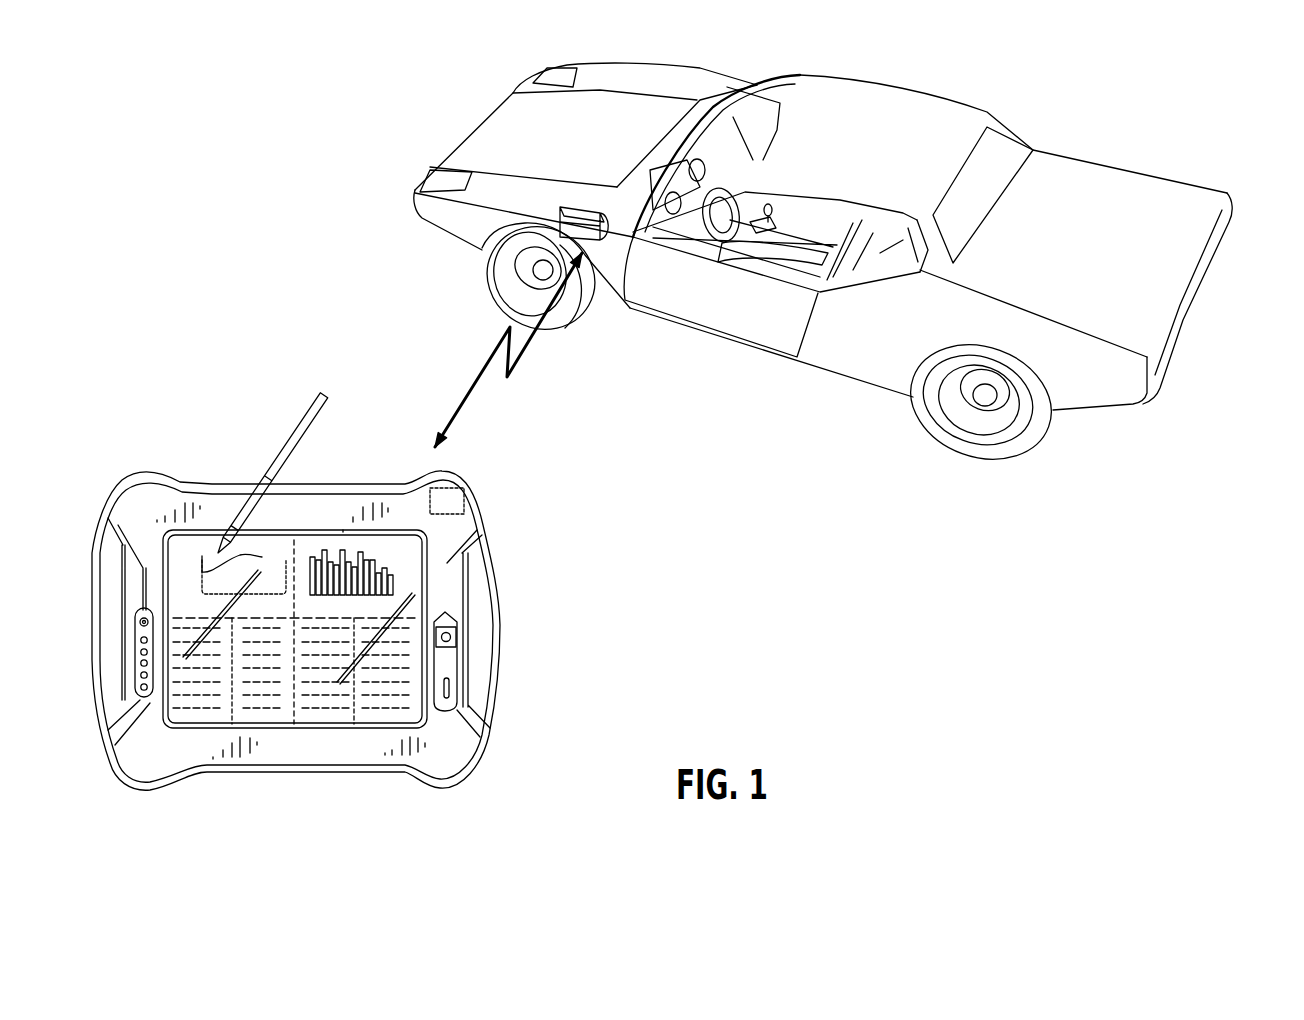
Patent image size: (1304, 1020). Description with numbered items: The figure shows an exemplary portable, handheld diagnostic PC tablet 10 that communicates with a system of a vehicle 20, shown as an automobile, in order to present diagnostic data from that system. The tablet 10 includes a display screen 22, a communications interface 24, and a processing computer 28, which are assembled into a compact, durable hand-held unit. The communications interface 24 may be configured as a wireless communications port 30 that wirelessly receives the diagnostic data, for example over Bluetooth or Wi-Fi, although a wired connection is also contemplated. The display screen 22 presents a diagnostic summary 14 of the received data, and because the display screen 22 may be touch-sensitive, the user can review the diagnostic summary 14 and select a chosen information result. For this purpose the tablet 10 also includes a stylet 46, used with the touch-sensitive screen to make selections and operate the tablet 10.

The diagnostic PC tablet 10 is at (131, 446).
The diagnostic summary 14 is at (318, 710).
The vehicle 20 is at (718, 337).
The display screen 22 is at (413, 602).
The communications interface 24 is at (535, 491).
The processing computer 28 is at (535, 491).
The wireless communications port 30 is at (468, 495).
The stylet 46 is at (293, 443).